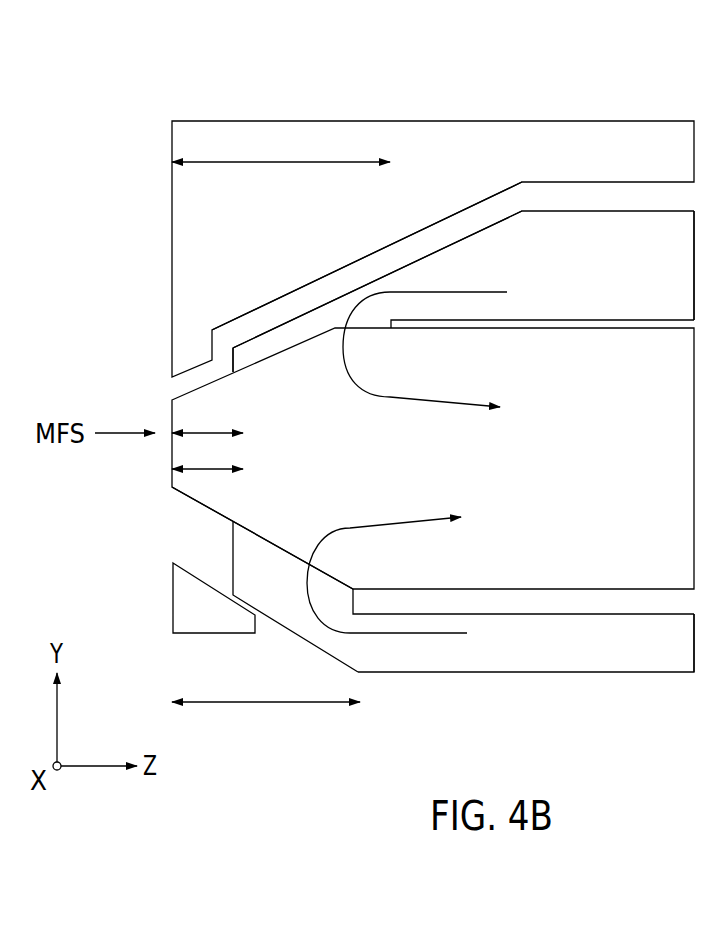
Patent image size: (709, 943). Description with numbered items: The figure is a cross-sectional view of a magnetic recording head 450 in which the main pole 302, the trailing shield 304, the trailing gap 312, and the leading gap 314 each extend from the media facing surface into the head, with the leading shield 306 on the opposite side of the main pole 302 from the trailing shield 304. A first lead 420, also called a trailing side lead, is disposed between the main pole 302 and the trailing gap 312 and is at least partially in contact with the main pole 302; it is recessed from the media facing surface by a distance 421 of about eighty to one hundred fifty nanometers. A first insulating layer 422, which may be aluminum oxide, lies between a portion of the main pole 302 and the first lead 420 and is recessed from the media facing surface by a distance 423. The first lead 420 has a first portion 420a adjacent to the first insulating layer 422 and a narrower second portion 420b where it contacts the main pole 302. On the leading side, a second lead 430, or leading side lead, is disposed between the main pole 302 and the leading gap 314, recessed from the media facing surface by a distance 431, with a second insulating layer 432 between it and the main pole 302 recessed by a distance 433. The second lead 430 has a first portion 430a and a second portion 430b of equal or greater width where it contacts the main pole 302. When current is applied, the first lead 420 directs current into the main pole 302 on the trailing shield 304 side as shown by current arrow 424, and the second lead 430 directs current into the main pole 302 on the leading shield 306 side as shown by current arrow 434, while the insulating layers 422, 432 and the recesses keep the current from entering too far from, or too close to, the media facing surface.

The magnetic recording head 450 is at (188, 77).
The distance 423 is at (281, 148).
The trailing shield 304 is at (270, 247).
The trailing gap 312 is at (387, 263).
The first lead 420 is at (593, 276).
The first portion 420a is at (682, 306).
The second portion 420b is at (298, 330).
The first insulating layer 422 is at (560, 322).
The main pole 302 is at (617, 476).
The current arrow 424 is at (408, 397).
The current arrow 434 is at (390, 525).
The distance 421 is at (207, 417).
The distance 431 is at (207, 487).
The distance 433 is at (266, 684).
The leading gap 314 is at (217, 557).
The second portion 430b is at (302, 584).
The second insulating layer 432 is at (523, 601).
The second lead 430 is at (542, 657).
The first portion 430a is at (657, 659).
The leading shield 306 is at (225, 624).